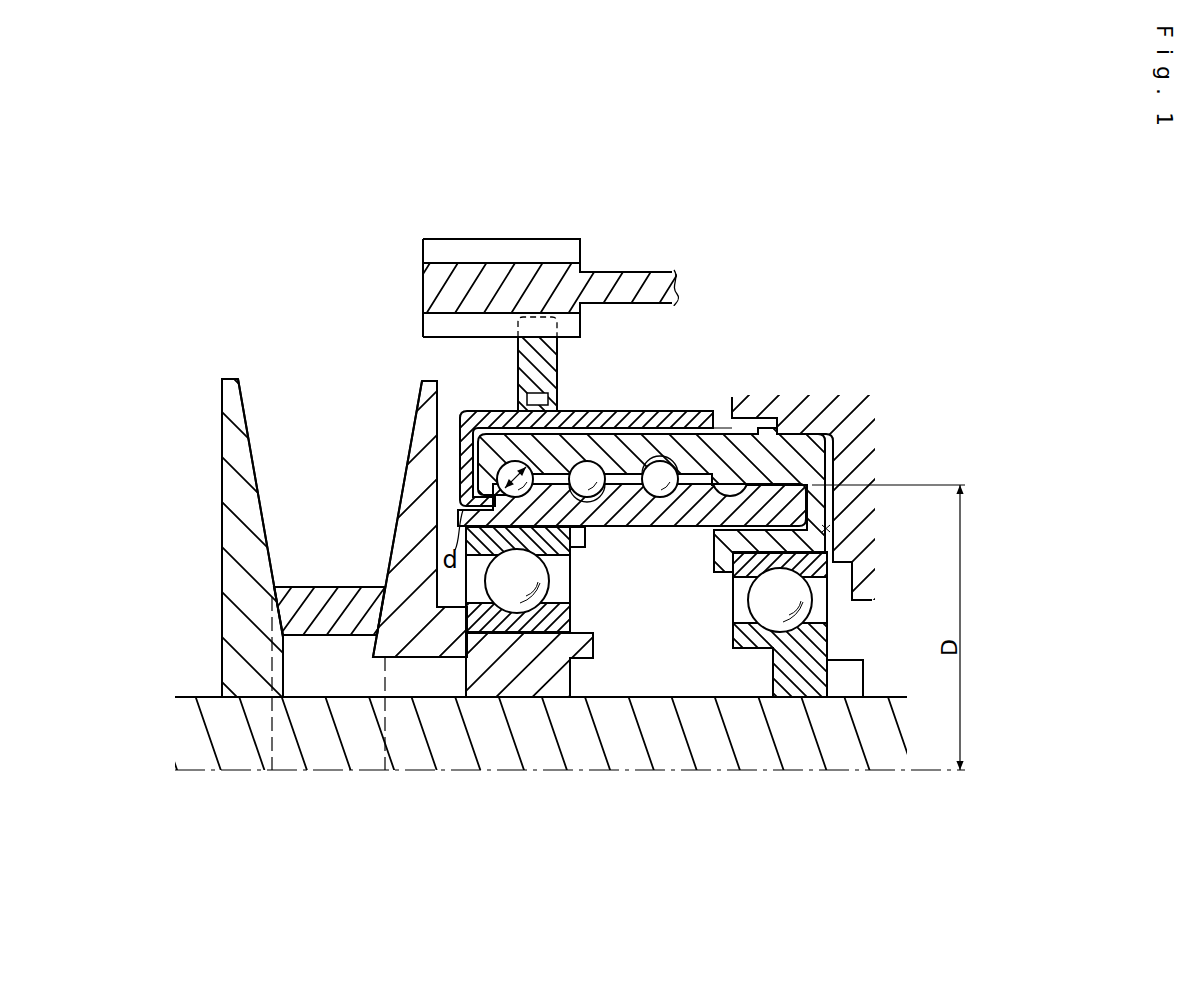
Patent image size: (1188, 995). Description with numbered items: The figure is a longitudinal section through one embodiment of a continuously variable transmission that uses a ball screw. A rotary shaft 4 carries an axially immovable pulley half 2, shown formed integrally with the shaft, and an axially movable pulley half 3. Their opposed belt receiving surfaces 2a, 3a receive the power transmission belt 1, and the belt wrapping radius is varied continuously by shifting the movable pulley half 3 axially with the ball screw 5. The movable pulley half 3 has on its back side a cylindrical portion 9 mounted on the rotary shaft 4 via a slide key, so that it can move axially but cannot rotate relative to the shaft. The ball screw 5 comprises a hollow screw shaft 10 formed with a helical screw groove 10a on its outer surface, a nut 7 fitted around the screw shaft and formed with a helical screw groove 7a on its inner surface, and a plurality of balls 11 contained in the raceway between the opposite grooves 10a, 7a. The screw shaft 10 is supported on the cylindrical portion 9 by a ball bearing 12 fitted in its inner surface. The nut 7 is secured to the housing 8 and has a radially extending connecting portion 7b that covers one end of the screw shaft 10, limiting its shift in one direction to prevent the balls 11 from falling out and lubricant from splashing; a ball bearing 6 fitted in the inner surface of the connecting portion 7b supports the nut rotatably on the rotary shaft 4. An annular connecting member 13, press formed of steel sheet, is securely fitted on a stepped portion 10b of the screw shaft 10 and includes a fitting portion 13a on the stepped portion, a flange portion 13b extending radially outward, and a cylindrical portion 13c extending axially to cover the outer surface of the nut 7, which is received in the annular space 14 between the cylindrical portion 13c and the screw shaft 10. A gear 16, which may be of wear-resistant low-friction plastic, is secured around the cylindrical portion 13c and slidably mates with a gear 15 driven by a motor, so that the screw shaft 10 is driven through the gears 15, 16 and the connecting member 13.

The power transmission belt 1 is at (315, 587).
The axially immovable pulley half 2 is at (221, 482).
The belt receiving surface 2a is at (254, 468).
The axially movable pulley half 3 is at (415, 415).
The belt receiving surface 3a is at (410, 450).
The rotary shaft 4 is at (686, 748).
The ball screw 5 is at (722, 417).
The ball bearing 6 is at (829, 643).
The nut 7 is at (742, 430).
The helical screw groove 7a is at (663, 472).
The connecting portion 7b is at (830, 528).
The housing 8 is at (858, 437).
The cylindrical portion 9 is at (531, 682).
The screw shaft 10 is at (648, 529).
The helical screw groove 10a is at (588, 498).
The stepped portion 10b is at (460, 520).
The balls 11 is at (523, 462).
The ball bearing 12 is at (573, 612).
The annular connecting member 13 is at (468, 410).
The fitting portion 13a is at (462, 505).
The flange portion 13b is at (462, 466).
The cylindrical portion 13c is at (665, 410).
The annular space 14 is at (476, 486).
The gear 15 is at (423, 283).
The gear 16 is at (558, 365).